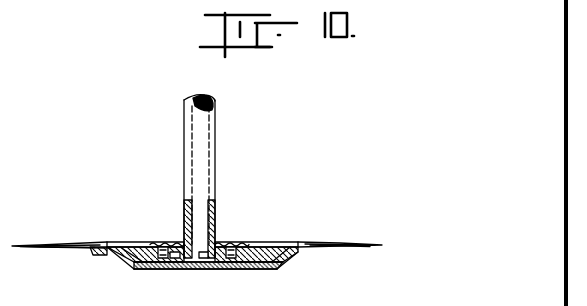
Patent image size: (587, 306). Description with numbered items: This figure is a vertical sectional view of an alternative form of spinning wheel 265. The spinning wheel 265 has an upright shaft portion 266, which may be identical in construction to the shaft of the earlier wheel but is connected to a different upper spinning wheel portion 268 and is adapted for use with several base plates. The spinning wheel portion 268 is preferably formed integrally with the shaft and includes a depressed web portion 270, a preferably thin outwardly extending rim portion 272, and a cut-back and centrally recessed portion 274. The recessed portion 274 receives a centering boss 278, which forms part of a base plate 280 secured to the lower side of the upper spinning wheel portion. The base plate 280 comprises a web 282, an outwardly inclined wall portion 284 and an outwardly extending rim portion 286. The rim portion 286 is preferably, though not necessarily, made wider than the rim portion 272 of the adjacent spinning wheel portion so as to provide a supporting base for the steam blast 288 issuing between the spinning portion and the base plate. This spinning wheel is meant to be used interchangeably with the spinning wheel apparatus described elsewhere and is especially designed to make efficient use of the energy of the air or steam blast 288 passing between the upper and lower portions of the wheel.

The spinning wheel 265 is at (183, 167).
The shaft portion 266 is at (217, 163).
The spinning wheel portion 268 is at (121, 241).
The depressed web portion 270 is at (151, 242).
The rim portion 272 is at (280, 242).
The cut-back and centrally recessed portion 274 is at (175, 260).
The centering boss 278 is at (206, 259).
The base plate 280 is at (272, 267).
The web 282 is at (156, 264).
The outwardly inclined wall portion 284 is at (130, 259).
The rim portion 286 is at (100, 254).
The steam blast 288 is at (70, 242).